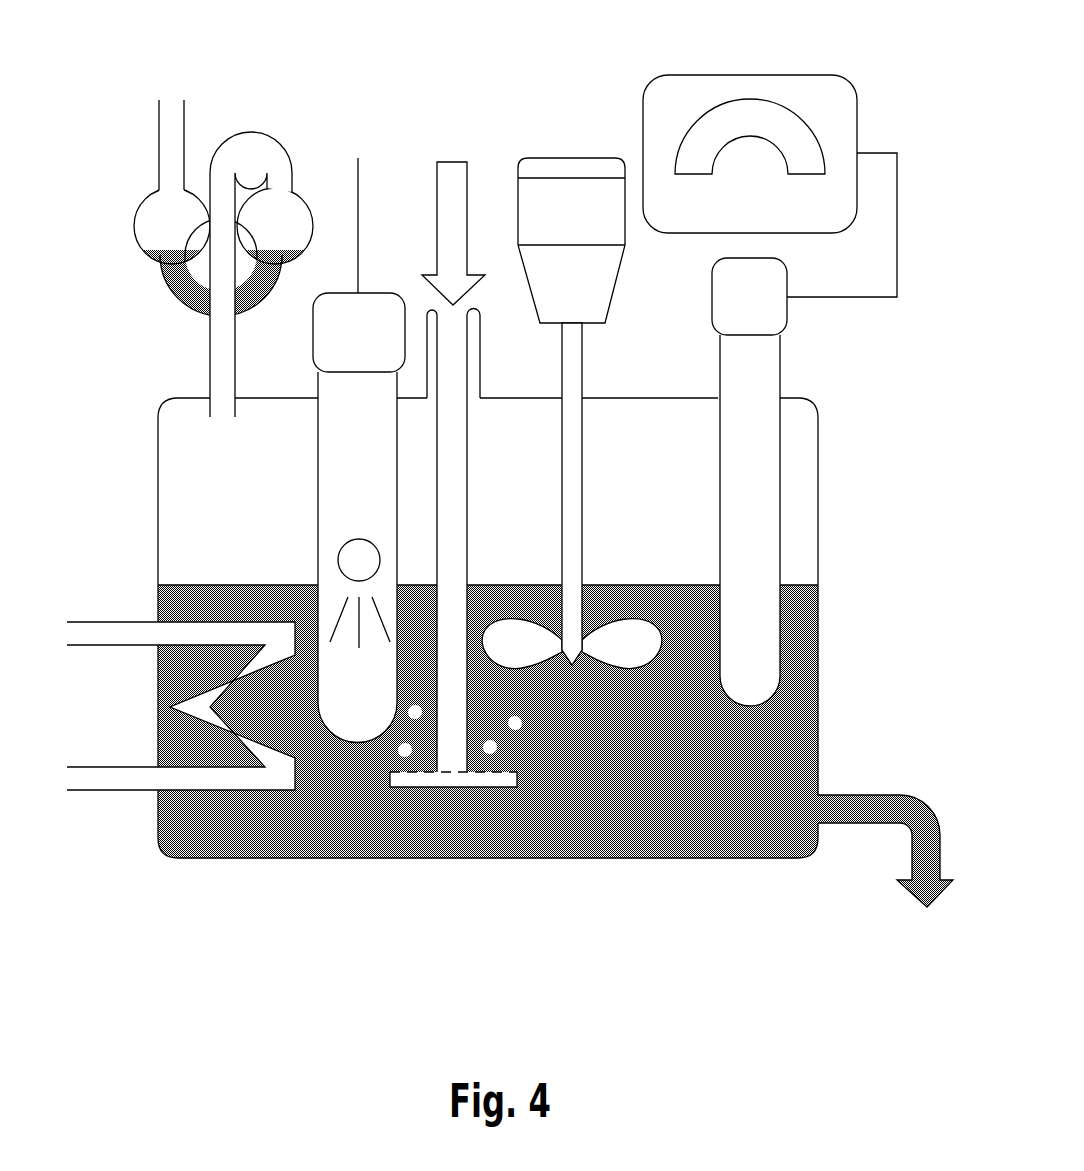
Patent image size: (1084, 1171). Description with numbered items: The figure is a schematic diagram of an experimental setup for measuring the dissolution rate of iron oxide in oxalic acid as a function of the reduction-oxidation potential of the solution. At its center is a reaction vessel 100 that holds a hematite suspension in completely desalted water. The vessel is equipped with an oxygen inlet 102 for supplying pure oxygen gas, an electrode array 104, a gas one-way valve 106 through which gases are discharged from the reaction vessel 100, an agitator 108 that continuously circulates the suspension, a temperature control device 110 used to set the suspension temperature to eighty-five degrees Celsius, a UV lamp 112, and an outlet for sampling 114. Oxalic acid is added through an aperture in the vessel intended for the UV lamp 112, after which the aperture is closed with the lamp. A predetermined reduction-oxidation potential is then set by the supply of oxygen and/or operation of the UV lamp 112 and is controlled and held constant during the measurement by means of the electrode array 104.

The reaction vessel 100 is at (180, 513).
The oxygen inlet 102 is at (452, 372).
The electrode array 104 is at (767, 372).
The gas one-way valve 106 is at (160, 225).
The agitator 108 is at (592, 295).
The temperature control device 110 is at (93, 635).
The UV lamp 112 is at (332, 468).
The outlet for sampling 114 is at (922, 823).